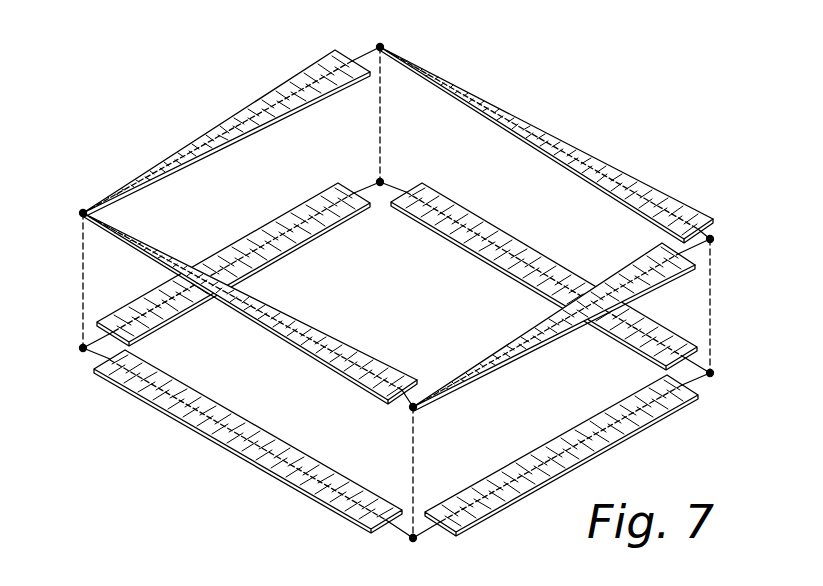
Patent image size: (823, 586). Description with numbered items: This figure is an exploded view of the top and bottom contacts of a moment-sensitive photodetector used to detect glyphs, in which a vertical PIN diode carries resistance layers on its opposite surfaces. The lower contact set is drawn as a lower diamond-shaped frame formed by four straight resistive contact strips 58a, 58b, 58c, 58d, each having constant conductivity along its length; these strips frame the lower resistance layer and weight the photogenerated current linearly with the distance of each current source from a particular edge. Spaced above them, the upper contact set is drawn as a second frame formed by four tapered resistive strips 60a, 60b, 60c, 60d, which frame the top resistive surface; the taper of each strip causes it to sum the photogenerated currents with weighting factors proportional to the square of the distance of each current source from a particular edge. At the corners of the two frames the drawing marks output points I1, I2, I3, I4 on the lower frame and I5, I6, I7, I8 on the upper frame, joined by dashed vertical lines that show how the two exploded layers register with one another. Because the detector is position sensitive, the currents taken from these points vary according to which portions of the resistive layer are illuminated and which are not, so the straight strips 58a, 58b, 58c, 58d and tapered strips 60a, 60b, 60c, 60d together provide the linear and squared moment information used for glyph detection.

The straight resistive contact strip 58a is at (277, 227).
The straight resistive contact strip 58b is at (223, 418).
The straight resistive contact strip 58c is at (617, 410).
The straight resistive contact strip 58d is at (490, 230).
The tapered resistive strip 60a is at (253, 107).
The tapered resistive strip 60b is at (300, 325).
The tapered resistive strip 60c is at (518, 333).
The tapered resistive strip 60d is at (607, 167).
The current node I1 is at (381, 182).
The current node I2 is at (710, 373).
The current node I3 is at (413, 538).
The current node I4 is at (83, 348).
The current node I5 is at (381, 47).
The current node I6 is at (710, 239).
The current node I7 is at (413, 407).
The current node I8 is at (83, 213).